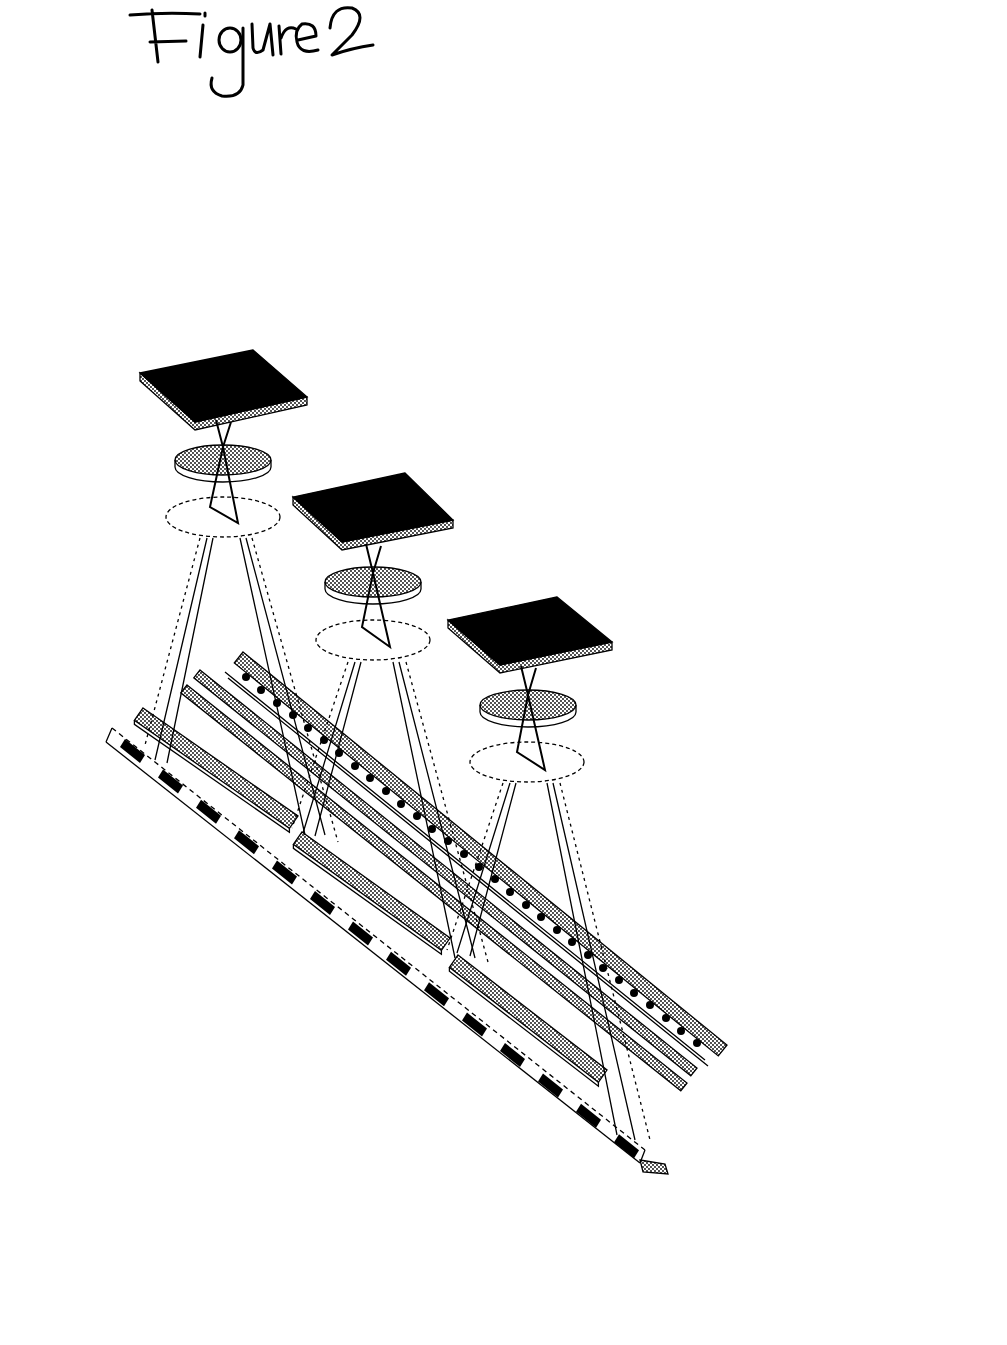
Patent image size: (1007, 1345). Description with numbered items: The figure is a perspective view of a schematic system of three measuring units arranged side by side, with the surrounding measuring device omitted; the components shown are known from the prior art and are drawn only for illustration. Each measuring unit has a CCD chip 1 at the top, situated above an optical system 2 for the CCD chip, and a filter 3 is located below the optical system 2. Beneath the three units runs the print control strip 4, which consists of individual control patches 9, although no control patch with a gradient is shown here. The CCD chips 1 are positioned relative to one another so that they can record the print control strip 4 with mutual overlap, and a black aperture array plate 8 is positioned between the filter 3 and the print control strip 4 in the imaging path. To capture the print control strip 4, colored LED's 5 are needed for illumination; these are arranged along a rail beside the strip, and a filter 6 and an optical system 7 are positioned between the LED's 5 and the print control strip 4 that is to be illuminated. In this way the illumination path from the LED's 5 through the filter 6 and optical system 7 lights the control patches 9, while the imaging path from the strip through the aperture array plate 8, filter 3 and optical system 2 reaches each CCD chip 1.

The CCD chip 1 is at (243, 358).
The optical system for the CCD chip 2 is at (272, 448).
The filter 3 is at (165, 522).
The print control strip 4 is at (415, 982).
The colored LED's 5 is at (727, 1050).
The filter 6 is at (707, 1060).
The optical system 7 is at (697, 1087).
The black aperture array plate 8 is at (563, 1040).
The control patches 9 is at (636, 1260).